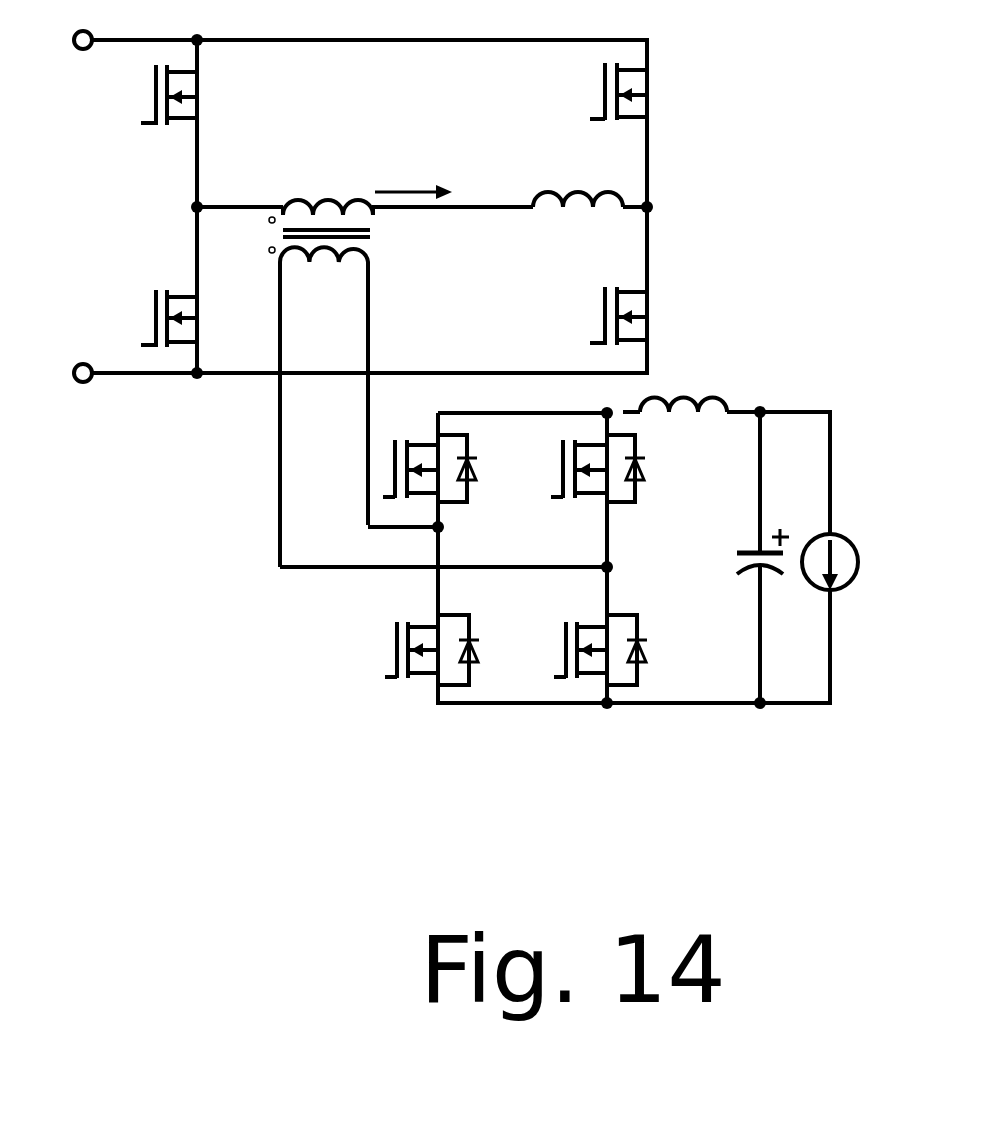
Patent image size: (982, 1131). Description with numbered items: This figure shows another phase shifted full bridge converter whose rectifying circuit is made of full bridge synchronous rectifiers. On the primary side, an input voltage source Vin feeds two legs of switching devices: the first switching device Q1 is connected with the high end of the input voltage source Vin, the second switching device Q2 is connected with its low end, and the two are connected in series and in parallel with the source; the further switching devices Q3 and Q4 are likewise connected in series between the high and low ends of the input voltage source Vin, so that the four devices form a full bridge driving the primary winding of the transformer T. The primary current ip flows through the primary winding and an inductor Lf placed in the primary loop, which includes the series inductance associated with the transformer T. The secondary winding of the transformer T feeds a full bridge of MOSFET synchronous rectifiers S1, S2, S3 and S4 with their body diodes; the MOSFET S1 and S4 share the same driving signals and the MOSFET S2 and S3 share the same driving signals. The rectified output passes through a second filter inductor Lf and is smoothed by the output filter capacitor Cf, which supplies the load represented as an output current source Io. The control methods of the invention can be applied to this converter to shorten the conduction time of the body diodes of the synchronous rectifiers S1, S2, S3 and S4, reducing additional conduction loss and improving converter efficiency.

The input voltage source Vin is at (68, 204).
The first switching device Q1 is at (151, 95).
The second switching device Q2 is at (151, 319).
The switching device Q3 is at (645, 91).
The switching device Q4 is at (645, 318).
The transformer T is at (339, 383).
The primary current ip is at (413, 169).
The filter inductor Lf is at (630, 298).
The synchronous rectifier S1 is at (445, 468).
The synchronous rectifier S2 is at (448, 650).
The MOSFET S3 is at (613, 468).
The MOSFET S4 is at (617, 650).
The output filter capacitor Cf is at (747, 560).
The output current source (load) Io is at (849, 564).